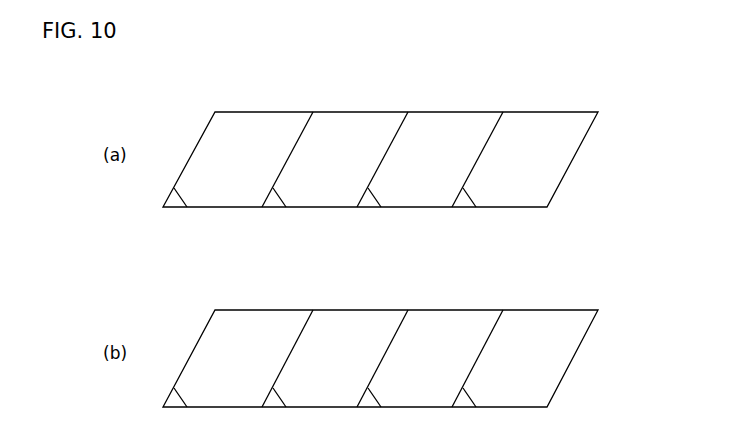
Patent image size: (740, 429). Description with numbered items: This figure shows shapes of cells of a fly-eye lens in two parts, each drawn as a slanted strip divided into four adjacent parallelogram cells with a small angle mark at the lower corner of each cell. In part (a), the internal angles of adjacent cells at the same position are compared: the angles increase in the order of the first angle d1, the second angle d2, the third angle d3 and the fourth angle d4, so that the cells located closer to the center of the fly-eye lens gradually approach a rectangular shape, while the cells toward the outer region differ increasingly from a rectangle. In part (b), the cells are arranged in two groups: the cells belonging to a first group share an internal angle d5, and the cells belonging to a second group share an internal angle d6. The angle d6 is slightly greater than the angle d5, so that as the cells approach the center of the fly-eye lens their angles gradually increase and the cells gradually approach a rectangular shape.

The internal angle d1 is at (243, 159).
The internal angle d2 is at (340, 159).
The internal angle d3 is at (435, 159).
The internal angle d4 is at (481, 195).
The internal angle d5 is at (240, 395).
The internal angle d6 is at (433, 395).